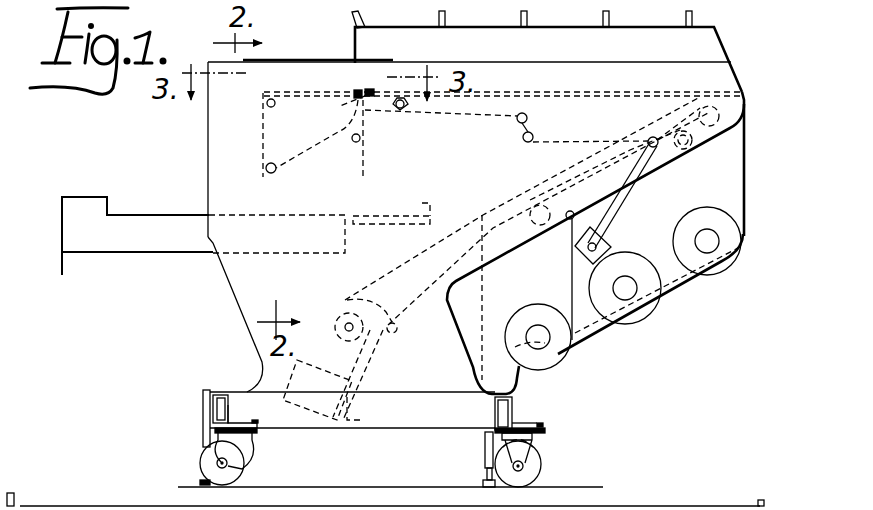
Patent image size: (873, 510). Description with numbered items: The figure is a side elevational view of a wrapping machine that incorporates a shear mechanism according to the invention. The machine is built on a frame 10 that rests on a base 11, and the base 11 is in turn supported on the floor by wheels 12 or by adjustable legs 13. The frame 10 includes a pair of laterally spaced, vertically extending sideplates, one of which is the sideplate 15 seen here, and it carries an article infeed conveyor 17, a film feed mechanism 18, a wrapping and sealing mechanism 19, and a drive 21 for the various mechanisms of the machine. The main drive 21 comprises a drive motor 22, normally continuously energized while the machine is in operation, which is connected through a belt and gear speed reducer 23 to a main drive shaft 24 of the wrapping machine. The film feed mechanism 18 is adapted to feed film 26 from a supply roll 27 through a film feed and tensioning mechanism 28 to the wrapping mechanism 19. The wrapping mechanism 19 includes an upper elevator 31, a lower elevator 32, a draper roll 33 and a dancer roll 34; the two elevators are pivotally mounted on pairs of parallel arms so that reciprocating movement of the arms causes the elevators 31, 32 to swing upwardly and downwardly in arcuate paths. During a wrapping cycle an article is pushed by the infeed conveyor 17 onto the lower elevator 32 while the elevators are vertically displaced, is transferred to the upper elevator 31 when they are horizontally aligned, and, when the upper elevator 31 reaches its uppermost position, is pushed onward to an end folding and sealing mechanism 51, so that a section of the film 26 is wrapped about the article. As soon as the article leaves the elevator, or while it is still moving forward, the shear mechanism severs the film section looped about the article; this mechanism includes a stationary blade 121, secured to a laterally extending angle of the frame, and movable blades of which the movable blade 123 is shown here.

The frame 10 is at (236, 303).
The base 11 is at (412, 432).
The wheels 12 is at (240, 465).
The adjustable legs 13 is at (203, 437).
The sideplate 15 is at (216, 151).
The article infeed conveyor 17 is at (88, 258).
The film feed mechanism 18 is at (706, 185).
The wrapping and sealing mechanism 19 is at (262, 169).
The drive 21 is at (380, 378).
The drive motor 22 is at (288, 372).
The belt and gear speed reducer 23 is at (344, 302).
The main drive shaft 24 is at (340, 318).
The film 26 is at (572, 275).
The supply roll 27 is at (557, 352).
The film feed and tensioning mechanism 28 is at (608, 136).
The upper elevator 31 is at (264, 128).
The lower elevator 32 is at (399, 217).
The draper roll 33 is at (378, 116).
The dancer roll 34 is at (365, 140).
The end folding and sealing mechanism 51 is at (737, 47).
The stationary blade 121 is at (370, 92).
The movable blade 123 is at (357, 92).